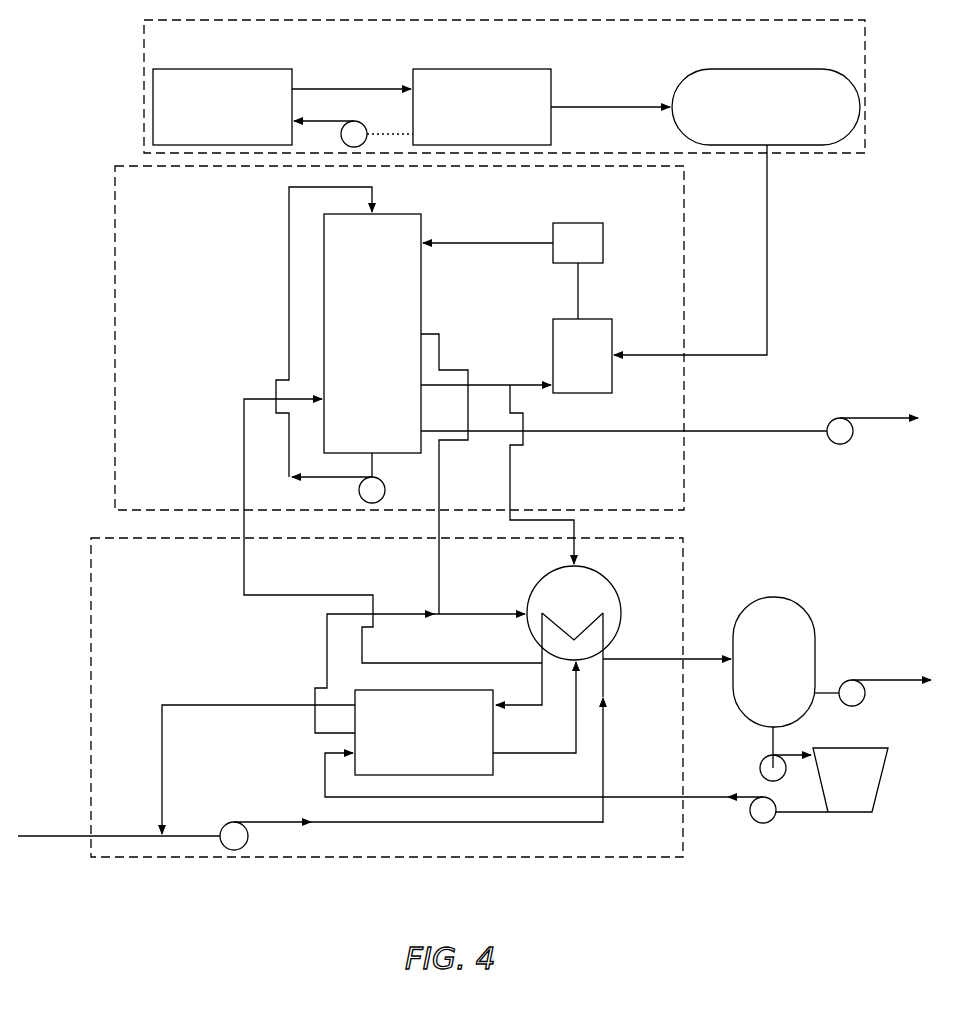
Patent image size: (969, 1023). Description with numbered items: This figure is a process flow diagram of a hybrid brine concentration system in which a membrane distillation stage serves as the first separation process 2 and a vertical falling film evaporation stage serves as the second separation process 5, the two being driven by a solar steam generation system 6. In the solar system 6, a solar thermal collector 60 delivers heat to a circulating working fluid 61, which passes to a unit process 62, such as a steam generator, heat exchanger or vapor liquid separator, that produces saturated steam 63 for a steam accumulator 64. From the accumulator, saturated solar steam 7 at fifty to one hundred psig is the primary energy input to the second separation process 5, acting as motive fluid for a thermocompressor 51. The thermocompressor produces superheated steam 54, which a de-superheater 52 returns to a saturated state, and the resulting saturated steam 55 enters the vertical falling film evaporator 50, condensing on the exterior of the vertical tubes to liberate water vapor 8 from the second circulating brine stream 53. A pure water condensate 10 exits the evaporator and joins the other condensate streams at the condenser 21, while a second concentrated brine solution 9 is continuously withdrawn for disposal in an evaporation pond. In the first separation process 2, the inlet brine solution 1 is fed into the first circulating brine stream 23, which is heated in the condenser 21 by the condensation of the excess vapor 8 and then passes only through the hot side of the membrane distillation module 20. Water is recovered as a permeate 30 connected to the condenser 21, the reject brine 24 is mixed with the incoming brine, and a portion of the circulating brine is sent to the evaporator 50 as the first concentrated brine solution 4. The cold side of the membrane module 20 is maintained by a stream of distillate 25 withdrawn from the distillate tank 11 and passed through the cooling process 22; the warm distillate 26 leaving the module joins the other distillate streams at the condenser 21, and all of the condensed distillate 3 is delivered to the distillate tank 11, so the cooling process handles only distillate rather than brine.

The inlet brine solution 1 is at (75, 830).
The first separation process 2 is at (88, 606).
The condensed distillate 3 is at (697, 655).
The first concentrated brine solution 4 is at (235, 577).
The second separation process 5 is at (112, 390).
The solar steam generation system 6 is at (142, 92).
The saturated solar steam 7 is at (773, 298).
The water vapor 8 is at (515, 488).
The second concentrated brine solution 9 is at (805, 425).
The pure water condensate 10 is at (452, 338).
The distillate tank 11 is at (832, 689).
The membrane distillation module 20 is at (424, 732).
The condenser 21 is at (618, 585).
The cooling process 22 is at (850, 780).
The first circulating brine stream 23 is at (612, 725).
The reject brine 24 is at (162, 700).
The stream of distillate 25 is at (703, 803).
The warm distillate 26 is at (540, 758).
The permeate 30 is at (320, 658).
The vertical falling film evaporator 50 is at (372, 333).
The thermocompressor 51 is at (582, 356).
The de-superheater 52 is at (578, 243).
The second circulating brine stream 53 is at (283, 250).
The superheated steam 54 is at (598, 292).
The saturated steam 55 is at (448, 232).
The solar thermal collector 60 is at (222, 107).
The circulating working fluid 61 is at (372, 86).
The unit process for producing saturated steam 62 is at (482, 107).
The saturated steam 63 is at (600, 104).
The steam accumulator 64 is at (766, 107).